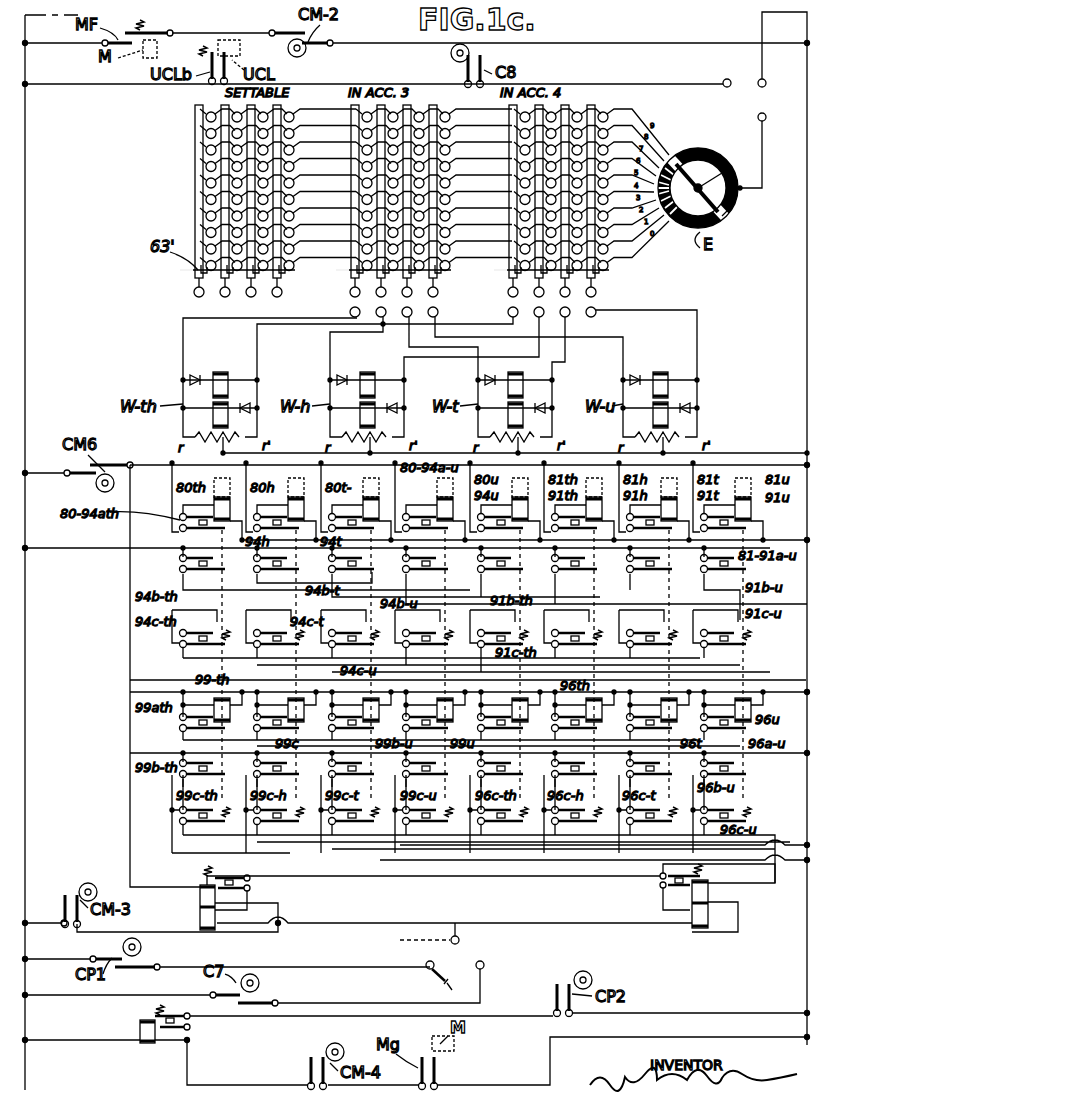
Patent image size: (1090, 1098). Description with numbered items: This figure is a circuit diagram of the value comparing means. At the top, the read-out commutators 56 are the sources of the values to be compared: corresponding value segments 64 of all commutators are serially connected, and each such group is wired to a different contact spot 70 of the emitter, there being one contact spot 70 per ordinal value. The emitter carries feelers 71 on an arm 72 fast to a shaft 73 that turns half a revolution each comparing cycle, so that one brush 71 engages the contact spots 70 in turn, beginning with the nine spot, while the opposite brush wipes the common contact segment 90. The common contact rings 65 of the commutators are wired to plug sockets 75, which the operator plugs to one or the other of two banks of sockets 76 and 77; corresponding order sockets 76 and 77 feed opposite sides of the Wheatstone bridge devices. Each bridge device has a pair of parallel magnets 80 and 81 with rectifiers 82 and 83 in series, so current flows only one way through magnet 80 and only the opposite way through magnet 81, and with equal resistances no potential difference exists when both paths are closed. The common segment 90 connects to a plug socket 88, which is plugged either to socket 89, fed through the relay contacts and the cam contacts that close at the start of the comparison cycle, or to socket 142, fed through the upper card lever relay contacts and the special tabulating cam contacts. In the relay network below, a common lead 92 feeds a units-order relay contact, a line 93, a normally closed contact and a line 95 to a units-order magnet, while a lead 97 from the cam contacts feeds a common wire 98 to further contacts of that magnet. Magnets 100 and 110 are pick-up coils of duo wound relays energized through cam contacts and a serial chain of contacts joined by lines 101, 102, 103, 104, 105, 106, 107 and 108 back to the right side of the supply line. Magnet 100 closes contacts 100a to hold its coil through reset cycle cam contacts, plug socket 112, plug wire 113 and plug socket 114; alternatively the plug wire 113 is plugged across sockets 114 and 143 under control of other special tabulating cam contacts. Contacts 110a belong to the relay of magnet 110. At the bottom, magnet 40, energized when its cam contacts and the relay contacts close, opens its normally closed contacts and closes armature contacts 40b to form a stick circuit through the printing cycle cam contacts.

The magnet 40 is at (138, 1030).
The armature contacts 40b is at (192, 1027).
The read-out commutator 56 is at (205, 105).
The value segments 64 is at (632, 125).
The common contact ring 65 is at (225, 278).
The contact spots 70 is at (672, 165).
The feelers 71 is at (692, 172).
The arm 72 is at (732, 168).
The shaft 73 is at (740, 197).
The plug sockets 75 is at (223, 295).
The plug sockets 76 is at (378, 310).
The plug sockets 77 is at (568, 311).
The magnet 80 is at (220, 378).
The magnet 81 is at (210, 416).
The rectifier 82 is at (196, 374).
The rectifier 83 is at (248, 412).
The plug socket 88 is at (757, 118).
The plug socket 89 is at (766, 82).
The common contact segment 90 is at (728, 216).
The common lead 92 is at (82, 552).
The line 93 is at (632, 614).
The line 95 is at (680, 682).
The lead 97 is at (130, 664).
The common wire 98 is at (548, 776).
The magnet 100 is at (708, 894).
The contacts 100a is at (660, 884).
The line 101 is at (655, 852).
The line 102 is at (400, 849).
The line 103 is at (378, 870).
The line 104 is at (360, 836).
The line 105 is at (312, 843).
The line 106 is at (258, 836).
The line 107 is at (238, 826).
The line 108 is at (200, 854).
The magnet 110 is at (200, 896).
The contacts 110a is at (252, 888).
The plug socket 112 is at (427, 969).
The plug wire 113 is at (407, 940).
The plug socket 114 is at (460, 940).
The plug socket 142 is at (725, 80).
The plug socket 143 is at (485, 966).